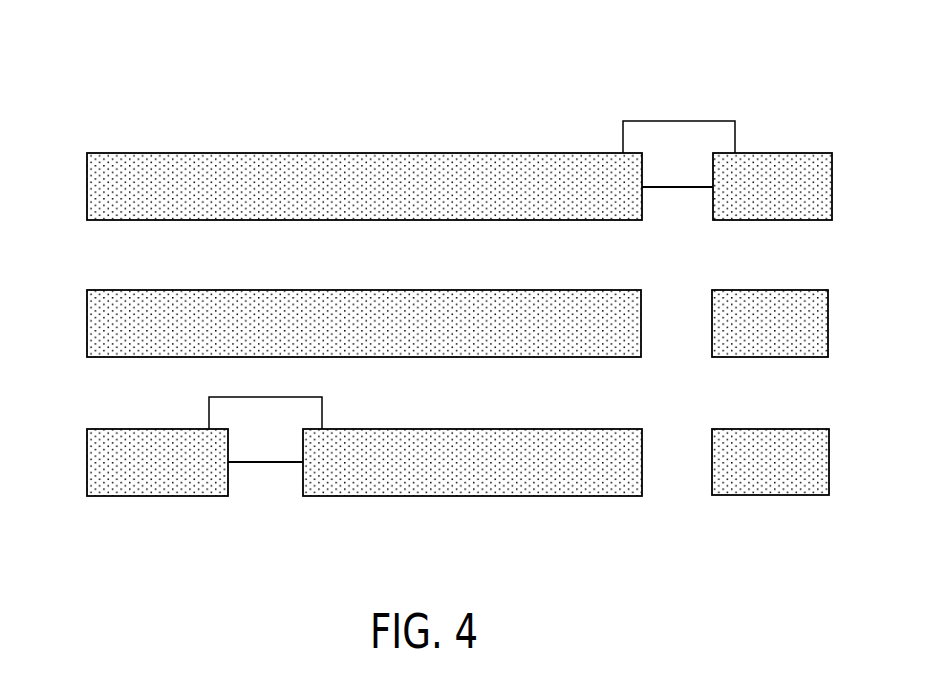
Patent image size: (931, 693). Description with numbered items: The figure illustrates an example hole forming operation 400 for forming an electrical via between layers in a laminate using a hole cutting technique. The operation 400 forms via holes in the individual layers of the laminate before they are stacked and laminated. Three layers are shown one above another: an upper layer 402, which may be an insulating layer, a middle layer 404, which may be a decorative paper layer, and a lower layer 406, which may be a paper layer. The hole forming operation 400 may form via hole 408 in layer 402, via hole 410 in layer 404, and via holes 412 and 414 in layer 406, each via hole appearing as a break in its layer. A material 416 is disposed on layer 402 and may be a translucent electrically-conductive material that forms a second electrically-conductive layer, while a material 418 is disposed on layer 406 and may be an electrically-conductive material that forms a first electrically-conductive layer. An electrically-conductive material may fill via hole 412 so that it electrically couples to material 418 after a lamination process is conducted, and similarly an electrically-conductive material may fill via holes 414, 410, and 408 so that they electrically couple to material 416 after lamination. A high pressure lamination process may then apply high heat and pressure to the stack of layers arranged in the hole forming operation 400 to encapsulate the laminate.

The hole forming operation 400 is at (160, 102).
The layer 402 is at (102, 177).
The layer 404 is at (103, 317).
The layer 406 is at (102, 453).
The via hole 408 is at (665, 200).
The via hole 410 is at (682, 327).
The via hole 412 is at (262, 482).
The via hole 414 is at (681, 460).
The material 416 is at (668, 147).
The material 418 is at (303, 422).